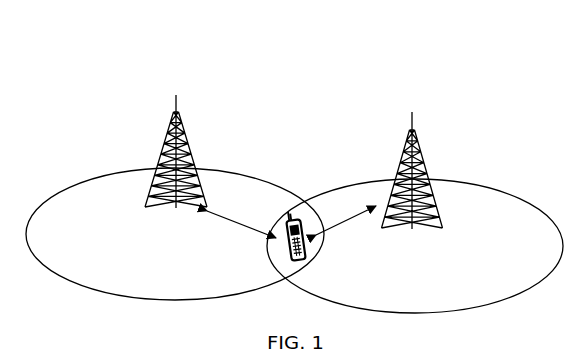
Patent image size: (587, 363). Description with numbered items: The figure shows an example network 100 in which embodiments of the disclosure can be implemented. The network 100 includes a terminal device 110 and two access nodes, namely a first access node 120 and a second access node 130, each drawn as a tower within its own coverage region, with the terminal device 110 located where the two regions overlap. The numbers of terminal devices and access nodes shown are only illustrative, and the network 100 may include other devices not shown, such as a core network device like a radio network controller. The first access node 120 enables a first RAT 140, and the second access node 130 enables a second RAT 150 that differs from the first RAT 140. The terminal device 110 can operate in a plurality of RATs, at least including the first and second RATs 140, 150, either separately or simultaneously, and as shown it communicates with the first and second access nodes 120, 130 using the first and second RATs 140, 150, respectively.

The network 100 is at (270, 41).
The terminal device 110 is at (310, 253).
The first access node 120 is at (183, 102).
The second access node 130 is at (420, 118).
The first RAT 140 is at (228, 221).
The second RAT 150 is at (355, 221).